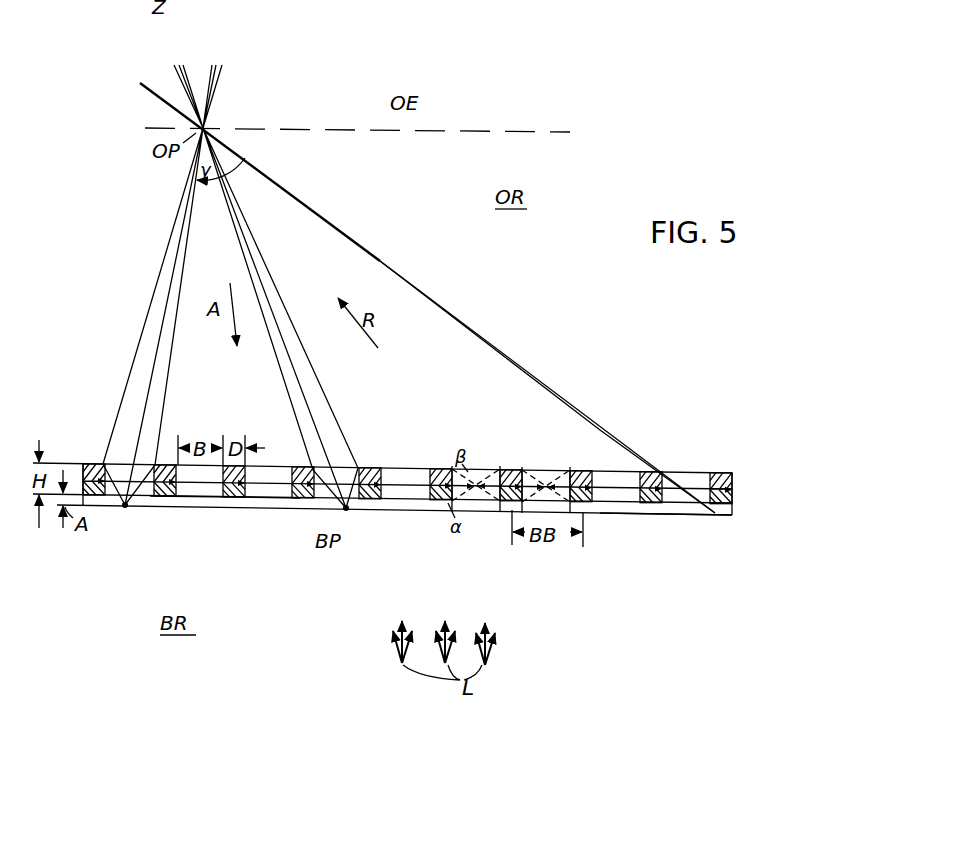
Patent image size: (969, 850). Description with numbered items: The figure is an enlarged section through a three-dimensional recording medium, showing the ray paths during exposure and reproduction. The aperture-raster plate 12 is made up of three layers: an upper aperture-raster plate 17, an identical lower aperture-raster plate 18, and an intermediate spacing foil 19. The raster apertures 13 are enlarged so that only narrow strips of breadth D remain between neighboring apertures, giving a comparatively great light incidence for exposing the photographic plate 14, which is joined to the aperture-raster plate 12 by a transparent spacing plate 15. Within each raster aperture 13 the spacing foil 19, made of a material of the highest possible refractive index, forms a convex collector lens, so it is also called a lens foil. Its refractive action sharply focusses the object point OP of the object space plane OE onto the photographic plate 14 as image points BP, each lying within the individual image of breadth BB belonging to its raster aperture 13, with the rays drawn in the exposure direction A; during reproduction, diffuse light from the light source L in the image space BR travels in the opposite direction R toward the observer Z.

The aperture-raster plate 12 is at (97, 462).
The raster aperture 13 is at (383, 468).
The photographic plate 14 is at (657, 517).
The transparent spacing plate 15 is at (228, 502).
The upper aperture-raster plate 17 is at (719, 474).
The lower aperture-raster plate 18 is at (730, 503).
The spacing foil 19 is at (728, 490).